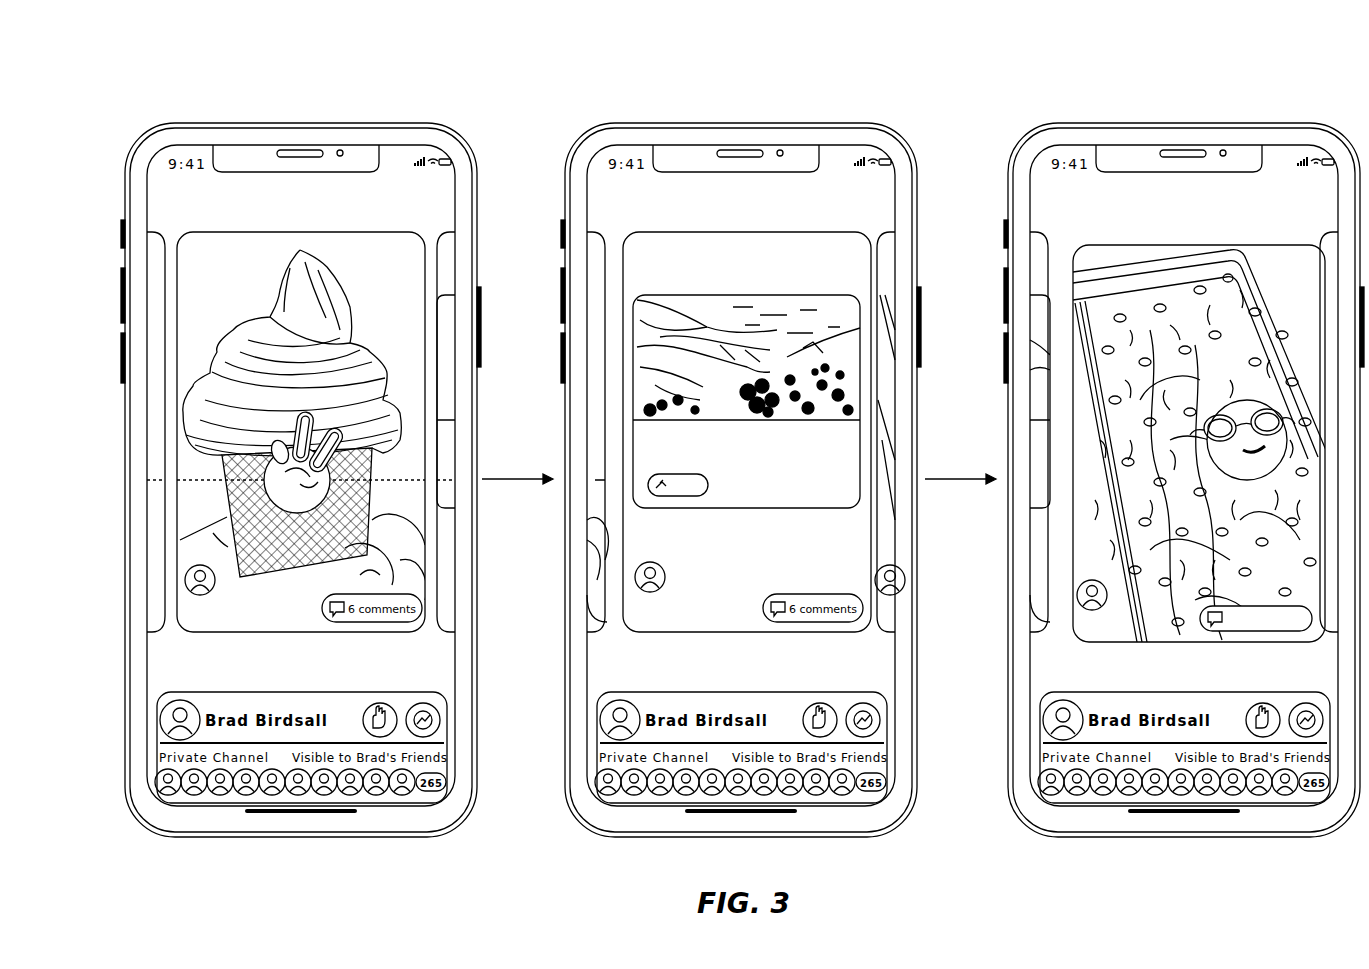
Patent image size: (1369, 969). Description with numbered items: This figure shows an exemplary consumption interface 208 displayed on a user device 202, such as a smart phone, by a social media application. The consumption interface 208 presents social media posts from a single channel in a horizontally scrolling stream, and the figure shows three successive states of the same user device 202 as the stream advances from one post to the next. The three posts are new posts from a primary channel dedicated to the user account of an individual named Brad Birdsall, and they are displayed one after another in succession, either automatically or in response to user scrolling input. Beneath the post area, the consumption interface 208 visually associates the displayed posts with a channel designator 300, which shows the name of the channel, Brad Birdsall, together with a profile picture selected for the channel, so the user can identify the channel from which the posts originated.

The user device 202 is at (733, 433).
The consumption interface 208 is at (353, 232).
The channel designator 300 is at (742, 736).